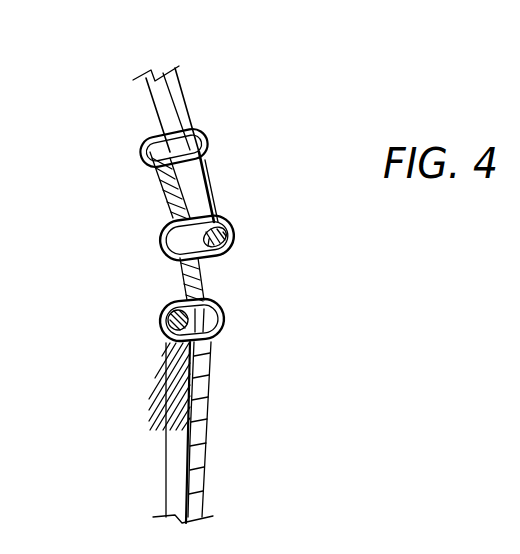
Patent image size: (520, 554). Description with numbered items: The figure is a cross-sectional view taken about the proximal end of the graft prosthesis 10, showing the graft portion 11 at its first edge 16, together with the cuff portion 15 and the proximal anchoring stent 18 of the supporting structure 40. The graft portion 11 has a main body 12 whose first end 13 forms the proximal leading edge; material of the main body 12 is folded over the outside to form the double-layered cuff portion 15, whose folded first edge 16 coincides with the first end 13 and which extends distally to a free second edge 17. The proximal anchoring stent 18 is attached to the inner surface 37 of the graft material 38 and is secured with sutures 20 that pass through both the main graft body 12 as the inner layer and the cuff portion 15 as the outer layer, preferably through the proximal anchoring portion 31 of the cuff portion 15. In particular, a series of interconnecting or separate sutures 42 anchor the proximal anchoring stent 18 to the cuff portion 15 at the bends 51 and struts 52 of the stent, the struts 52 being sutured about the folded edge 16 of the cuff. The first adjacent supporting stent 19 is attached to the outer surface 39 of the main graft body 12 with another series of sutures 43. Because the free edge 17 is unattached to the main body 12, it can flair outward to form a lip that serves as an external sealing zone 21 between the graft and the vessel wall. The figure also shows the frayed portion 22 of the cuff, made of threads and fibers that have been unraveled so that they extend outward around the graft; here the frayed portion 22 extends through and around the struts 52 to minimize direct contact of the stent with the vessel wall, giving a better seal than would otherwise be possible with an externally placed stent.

The graft prosthesis 10 is at (233, 140).
The graft portion 11 is at (213, 378).
The main body 12 is at (205, 429).
The first end 13 is at (133, 146).
The cuff portion 15 is at (155, 198).
The first edge 16 is at (131, 135).
The second edge 17 is at (148, 391).
The proximal anchoring stent 18 is at (150, 96).
The first adjacent supporting stent 19 is at (173, 440).
The sutures 20 is at (235, 232).
The external sealing zone 21 is at (140, 377).
The frayed portion 22 is at (148, 353).
The anchoring portion 31 is at (147, 249).
The inner surface 37 is at (203, 457).
The graft material 38 is at (207, 405).
The outer surface 39 is at (183, 470).
The supporting structure 40 is at (148, 323).
The sutures 42 is at (233, 230).
The sutures 43 is at (222, 307).
The bends 51 is at (241, 238).
The struts 52 is at (174, 98).